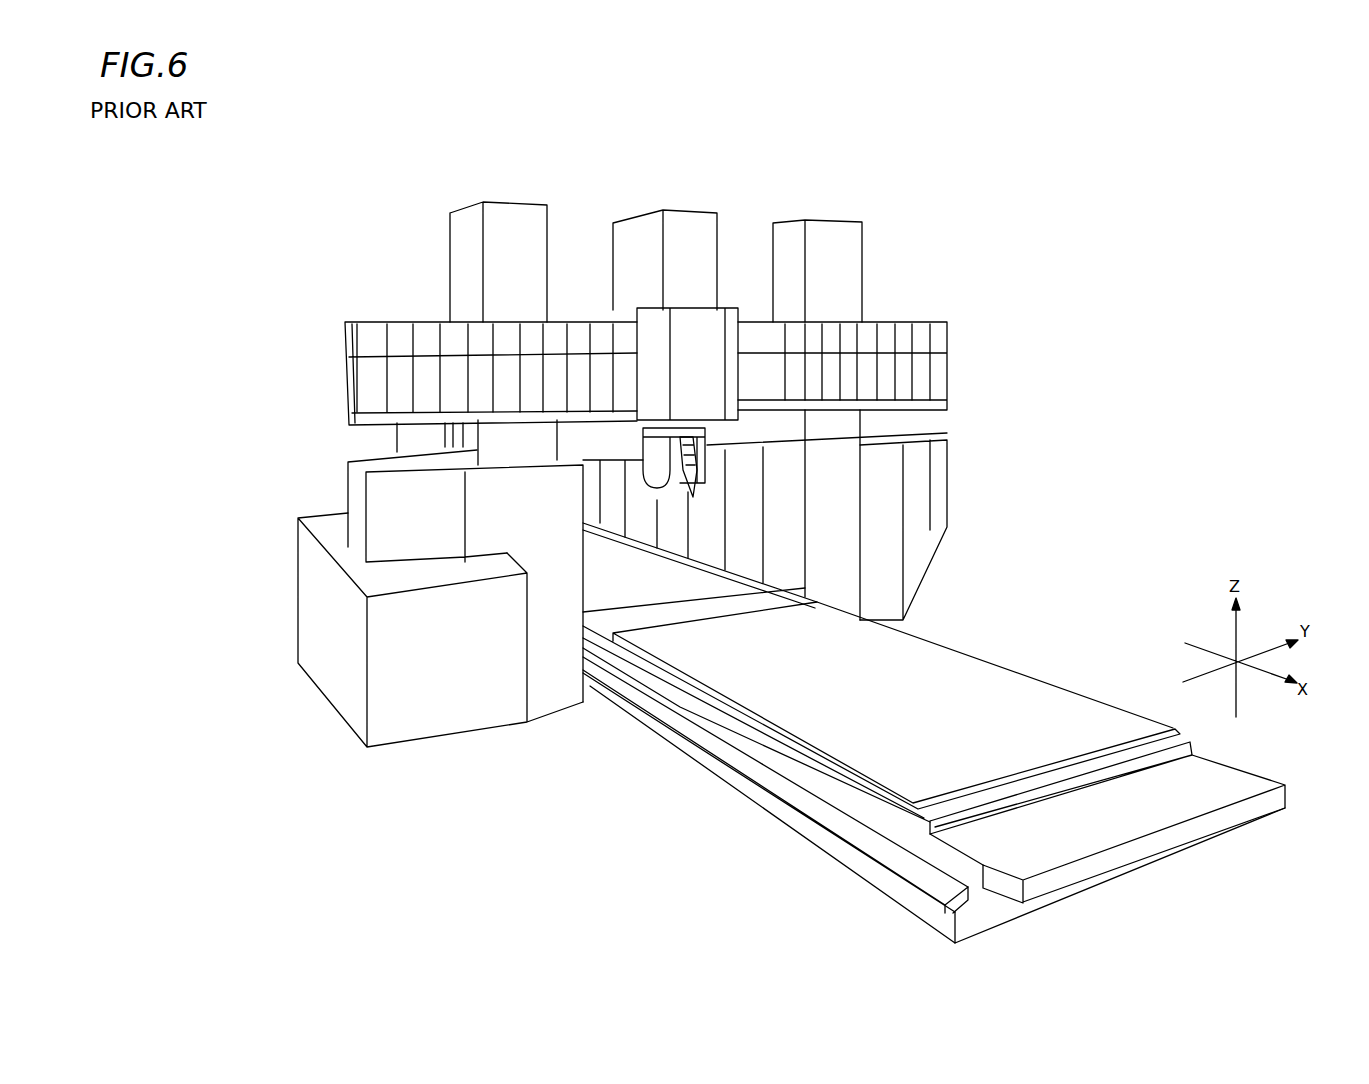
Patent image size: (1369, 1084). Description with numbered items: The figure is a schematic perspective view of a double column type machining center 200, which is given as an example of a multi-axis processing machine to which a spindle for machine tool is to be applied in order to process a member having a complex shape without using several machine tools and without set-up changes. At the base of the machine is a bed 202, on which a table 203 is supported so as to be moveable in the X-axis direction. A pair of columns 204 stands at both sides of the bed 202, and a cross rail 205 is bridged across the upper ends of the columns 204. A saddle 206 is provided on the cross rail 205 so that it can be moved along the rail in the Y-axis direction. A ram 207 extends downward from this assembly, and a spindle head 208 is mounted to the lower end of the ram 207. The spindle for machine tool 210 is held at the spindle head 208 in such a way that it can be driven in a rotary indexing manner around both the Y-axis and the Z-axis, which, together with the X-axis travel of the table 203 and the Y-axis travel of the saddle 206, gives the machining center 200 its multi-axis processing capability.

The double column type machining center 200 is at (428, 168).
The bed 202 is at (724, 784).
The table 203 is at (900, 750).
The columns 204 is at (497, 271).
The cross rail 205 is at (372, 386).
The saddle 206 is at (693, 336).
The ram 207 is at (637, 232).
The spindle head 208 is at (705, 434).
The spindle for machine tool 210 is at (690, 497).